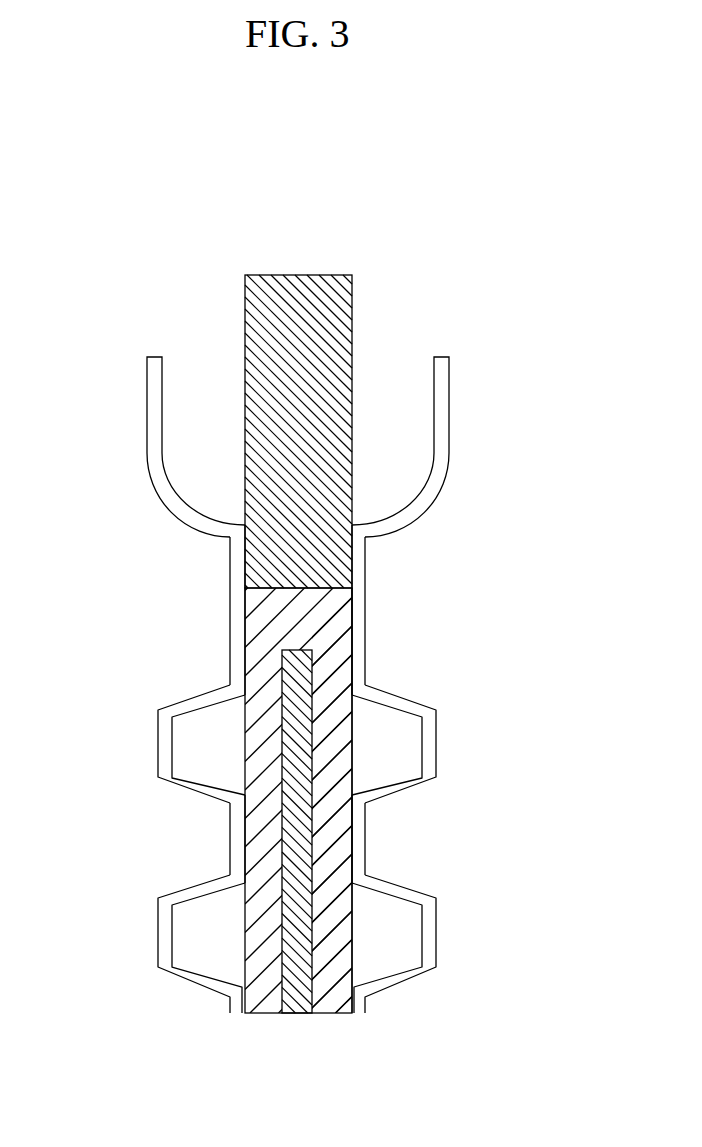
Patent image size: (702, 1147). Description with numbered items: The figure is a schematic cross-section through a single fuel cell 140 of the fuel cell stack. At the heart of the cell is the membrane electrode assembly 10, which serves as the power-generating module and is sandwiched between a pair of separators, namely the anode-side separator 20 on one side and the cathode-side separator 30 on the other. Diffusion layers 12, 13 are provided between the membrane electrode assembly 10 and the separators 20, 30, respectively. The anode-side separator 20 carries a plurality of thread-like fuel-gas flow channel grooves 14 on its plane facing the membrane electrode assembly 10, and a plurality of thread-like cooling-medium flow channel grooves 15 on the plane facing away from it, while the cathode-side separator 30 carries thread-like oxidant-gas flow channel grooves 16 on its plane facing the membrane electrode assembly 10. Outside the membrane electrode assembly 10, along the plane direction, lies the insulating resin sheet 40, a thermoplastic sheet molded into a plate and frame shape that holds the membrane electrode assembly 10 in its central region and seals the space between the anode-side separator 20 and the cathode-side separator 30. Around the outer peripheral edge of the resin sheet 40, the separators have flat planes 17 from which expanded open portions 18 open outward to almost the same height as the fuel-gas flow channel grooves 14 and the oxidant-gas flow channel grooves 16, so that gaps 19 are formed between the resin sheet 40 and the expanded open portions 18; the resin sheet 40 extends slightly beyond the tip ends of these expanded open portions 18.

The fuel cell 140 is at (448, 186).
The insulating resin sheet 40 is at (300, 290).
The membrane electrode assembly 10 is at (296, 1013).
The diffusion layer 12 is at (352, 933).
The diffusion layer 13 is at (242, 934).
The fuel-gas flow channel grooves 14 is at (387, 735).
The cooling-medium flow channel grooves 15 is at (400, 845).
The oxidant-gas flow channel grooves 16 is at (198, 733).
The flat planes 17 is at (228, 610).
The expanded open portions 18 is at (153, 403).
The gaps 19 is at (206, 375).
The anode-side separator 20 is at (365, 1013).
The cathode-side separator 30 is at (188, 983).